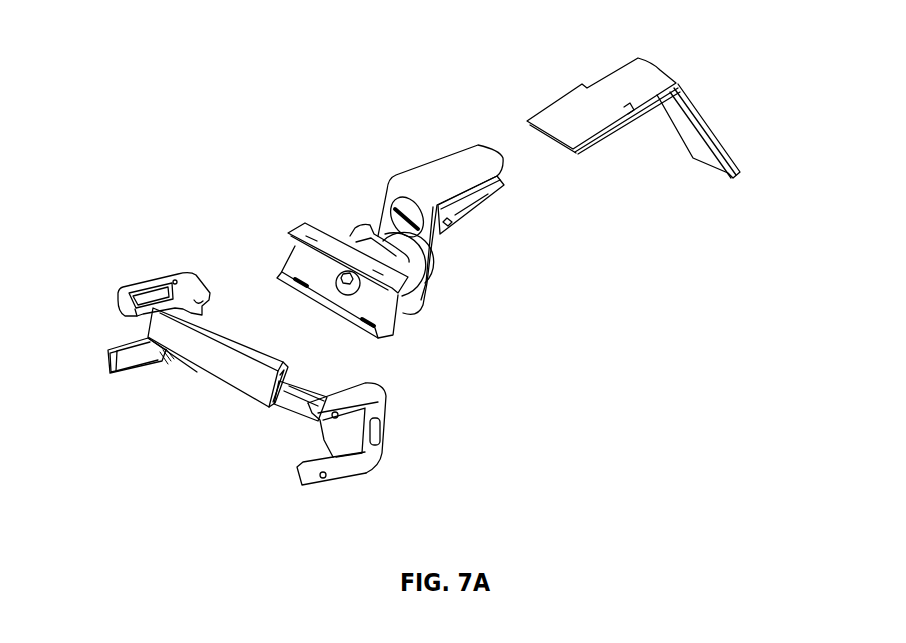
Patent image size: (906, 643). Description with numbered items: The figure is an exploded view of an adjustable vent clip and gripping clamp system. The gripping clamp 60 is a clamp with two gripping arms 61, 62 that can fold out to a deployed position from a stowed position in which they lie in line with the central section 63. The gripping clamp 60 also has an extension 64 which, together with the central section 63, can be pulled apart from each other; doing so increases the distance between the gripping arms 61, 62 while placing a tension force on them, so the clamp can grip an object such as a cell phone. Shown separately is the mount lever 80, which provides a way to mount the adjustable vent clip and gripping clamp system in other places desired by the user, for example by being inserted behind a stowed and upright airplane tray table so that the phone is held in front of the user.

The gripping clamp 60 is at (387, 423).
The gripping arm 61 is at (123, 287).
The gripping arm 62 is at (300, 468).
The central section 63 is at (201, 367).
The extension 64 is at (280, 413).
The mount lever 80 is at (685, 98).